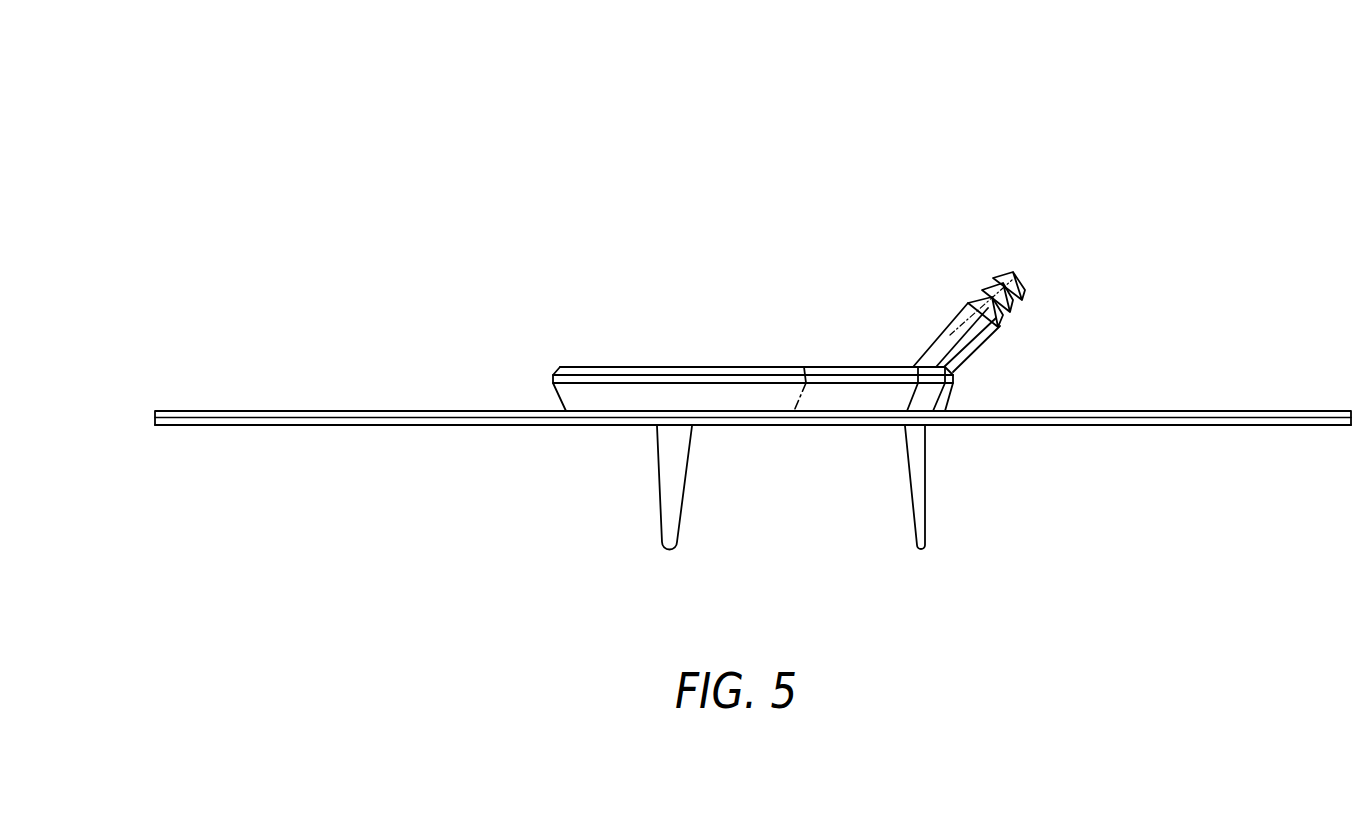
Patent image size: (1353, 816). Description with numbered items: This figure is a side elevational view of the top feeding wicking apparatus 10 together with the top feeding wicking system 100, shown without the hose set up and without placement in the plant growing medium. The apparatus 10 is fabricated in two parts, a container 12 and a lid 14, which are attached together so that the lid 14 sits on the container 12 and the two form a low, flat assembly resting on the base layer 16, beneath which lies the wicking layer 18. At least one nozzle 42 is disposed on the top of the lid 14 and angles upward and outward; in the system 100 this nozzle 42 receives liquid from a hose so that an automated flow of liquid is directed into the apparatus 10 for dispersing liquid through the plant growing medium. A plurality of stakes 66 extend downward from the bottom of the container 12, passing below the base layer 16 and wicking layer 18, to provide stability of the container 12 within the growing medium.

The top feeding wicking system 100 is at (656, 312).
The top feeding wicking apparatus 10 is at (793, 358).
The container 12 is at (557, 400).
The lid 14 is at (632, 367).
The base layer 16 is at (248, 411).
The wicking layer 18 is at (383, 426).
The nozzle 42 is at (1013, 310).
The stakes 66 is at (668, 482).